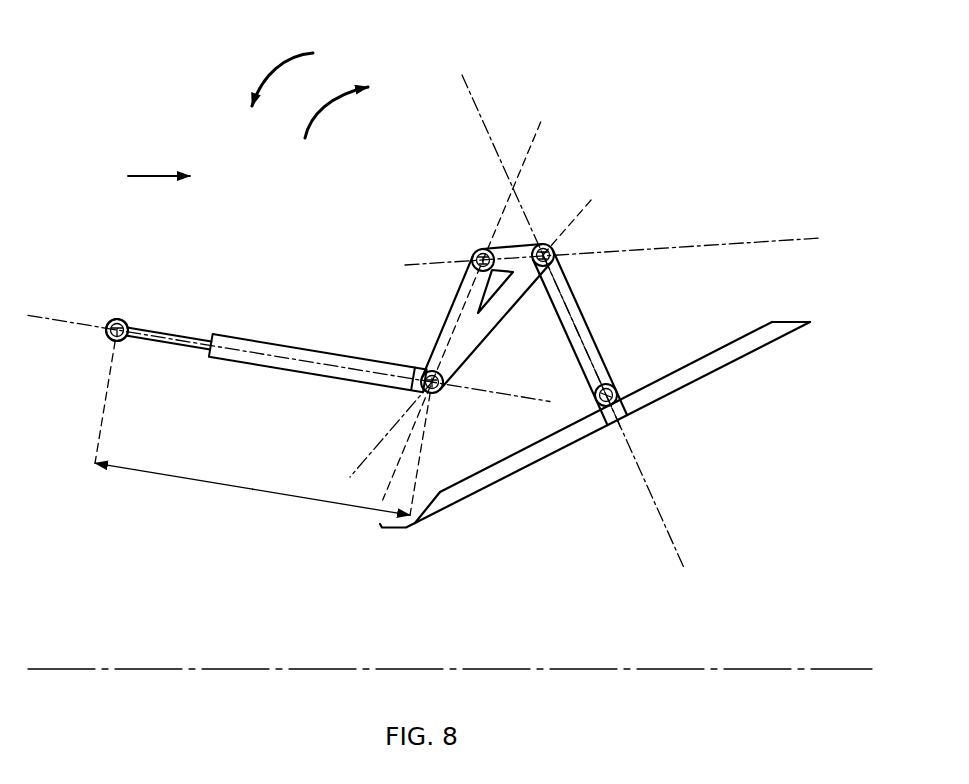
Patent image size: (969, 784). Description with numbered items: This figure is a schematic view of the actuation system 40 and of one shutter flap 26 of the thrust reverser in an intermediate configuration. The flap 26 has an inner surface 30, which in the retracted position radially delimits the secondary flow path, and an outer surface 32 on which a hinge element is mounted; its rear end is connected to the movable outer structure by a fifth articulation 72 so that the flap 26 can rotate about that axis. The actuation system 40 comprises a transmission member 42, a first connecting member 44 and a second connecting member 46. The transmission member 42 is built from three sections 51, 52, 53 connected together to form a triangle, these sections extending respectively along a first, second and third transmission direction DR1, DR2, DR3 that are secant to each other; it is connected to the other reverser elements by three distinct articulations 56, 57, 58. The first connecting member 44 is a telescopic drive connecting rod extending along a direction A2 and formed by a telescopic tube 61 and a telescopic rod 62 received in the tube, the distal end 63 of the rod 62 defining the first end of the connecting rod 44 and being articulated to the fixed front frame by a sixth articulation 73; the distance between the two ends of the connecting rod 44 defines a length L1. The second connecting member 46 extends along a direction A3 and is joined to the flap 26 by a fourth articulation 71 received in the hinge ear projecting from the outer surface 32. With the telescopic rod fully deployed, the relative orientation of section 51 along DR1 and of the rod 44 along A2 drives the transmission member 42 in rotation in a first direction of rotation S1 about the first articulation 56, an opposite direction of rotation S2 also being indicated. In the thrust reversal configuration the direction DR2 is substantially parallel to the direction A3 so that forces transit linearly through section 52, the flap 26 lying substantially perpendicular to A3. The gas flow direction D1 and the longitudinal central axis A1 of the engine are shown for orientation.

The shutter flap 26 is at (621, 397).
The inner surface 30 is at (489, 494).
The outer surface 32 is at (741, 333).
The fifth articulation 72 is at (819, 313).
The actuation system 40 is at (460, 276).
The transmission member 42 is at (452, 315).
The first section 51 is at (463, 288).
The second section 52 is at (508, 249).
The third section 53 is at (517, 288).
The first articulation 56 is at (478, 251).
The second articulation 57 is at (440, 392).
The third articulation 58 is at (555, 250).
The second connecting member 46 is at (578, 318).
The fourth articulation 71 is at (622, 388).
The first connecting member 44 is at (255, 347).
The telescopic tube 61 is at (318, 381).
The telescopic rod 62 is at (167, 341).
The distal end 63 is at (117, 320).
The sixth articulation 73 is at (117, 330).
The longitudinal central axis A1 is at (44, 668).
The direction A2 is at (37, 315).
The direction A3 is at (668, 527).
The first transmission direction DR1 is at (523, 152).
The second transmission direction DR2 is at (790, 234).
The third transmission direction DR3 is at (351, 468).
The length L1 is at (262, 432).
The first direction of rotation S1 is at (323, 97).
The swing direction S2 is at (281, 60).
The direction of gas flow D1 is at (155, 176).